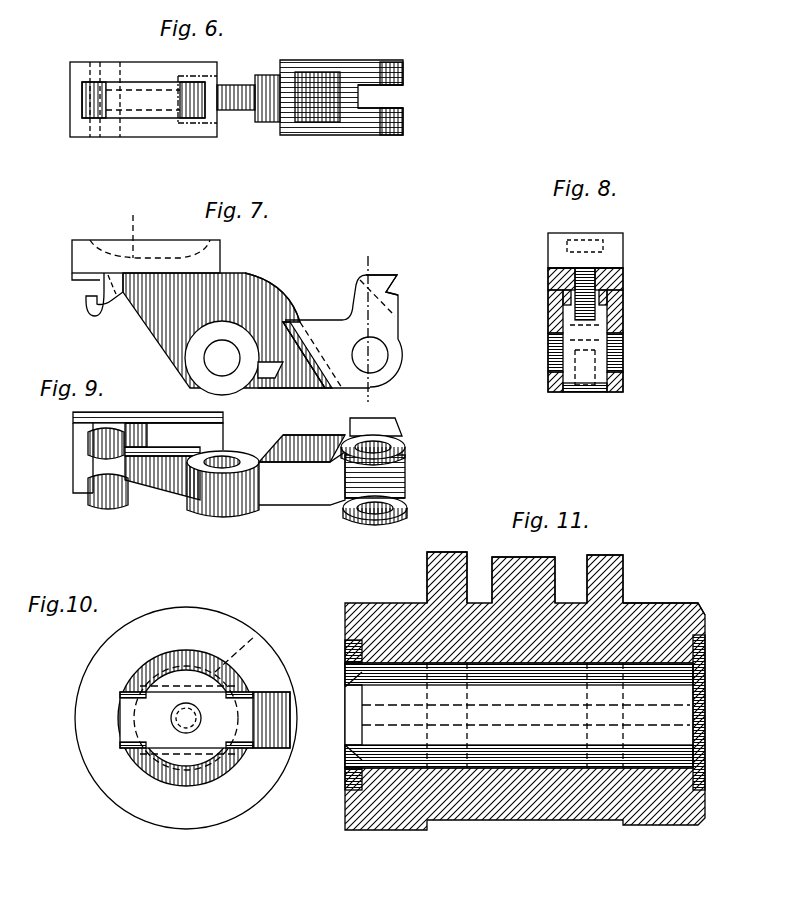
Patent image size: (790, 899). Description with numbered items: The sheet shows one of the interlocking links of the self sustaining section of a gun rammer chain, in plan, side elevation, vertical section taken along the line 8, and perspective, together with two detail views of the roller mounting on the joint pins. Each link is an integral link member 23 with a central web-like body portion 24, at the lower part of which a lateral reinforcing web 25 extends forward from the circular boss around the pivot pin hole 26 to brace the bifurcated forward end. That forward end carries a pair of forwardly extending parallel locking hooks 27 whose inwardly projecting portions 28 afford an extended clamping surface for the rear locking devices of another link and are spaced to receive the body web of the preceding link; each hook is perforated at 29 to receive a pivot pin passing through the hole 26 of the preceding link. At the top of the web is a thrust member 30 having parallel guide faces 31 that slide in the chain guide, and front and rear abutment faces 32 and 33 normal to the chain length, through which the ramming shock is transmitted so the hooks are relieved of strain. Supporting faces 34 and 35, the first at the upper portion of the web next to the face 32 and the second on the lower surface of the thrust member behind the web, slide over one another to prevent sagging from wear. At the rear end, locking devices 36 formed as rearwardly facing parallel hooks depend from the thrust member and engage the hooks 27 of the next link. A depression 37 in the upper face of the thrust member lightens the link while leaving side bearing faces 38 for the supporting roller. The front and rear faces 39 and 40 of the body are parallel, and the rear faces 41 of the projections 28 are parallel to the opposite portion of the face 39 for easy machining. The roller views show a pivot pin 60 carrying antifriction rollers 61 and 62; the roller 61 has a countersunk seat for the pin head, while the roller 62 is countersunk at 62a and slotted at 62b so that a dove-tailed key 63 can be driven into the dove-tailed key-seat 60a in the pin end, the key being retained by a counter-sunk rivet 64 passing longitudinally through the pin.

In FIG. 7, the section line 8— 8 is at (367, 325).
In FIG. 9, the section line 8— 8 is at (367, 409).
In FIG. 6, the link member 23 is at (234, 112).
In FIG. 7, the link member 23 is at (205, 380).
In FIG. 9, the link member 23 is at (223, 494).
In FIG. 8, the link member 23 is at (630, 326).
In FIG. 11, the link member 23 is at (560, 570).
In FIG. 6, the body portion 24 is at (266, 124).
In FIG. 7, the body portion 24 is at (288, 302).
In FIG. 9, the body portion 24 is at (296, 450).
In FIG. 8, the body portion 24 is at (612, 300).
In FIG. 6, the lateral reinforcing web 25 is at (262, 78).
In FIG. 7, the lateral reinforcing web 25 is at (300, 388).
In FIG. 9, the lateral reinforcing web 25 is at (280, 508).
In FIG. 7, the pivot pin hole 26 is at (214, 368).
In FIG. 9, the pivot pin hole 26 is at (212, 470).
In FIG. 6, the locking hooks 27 is at (382, 62).
In FIG. 7, the locking hooks 27 is at (396, 280).
In FIG. 9, the locking hooks 27 is at (398, 420).
In FIG. 6, the inwardly projecting portions 28 is at (400, 86).
In FIG. 9, the inwardly projecting portions 28 is at (405, 486).
In FIG. 8, the inwardly projecting portions 28 is at (556, 285).
In FIG. 7, the perforation 29 is at (386, 360).
In FIG. 9, the perforation 29 is at (406, 442).
In FIG. 8, the perforation 29 is at (556, 372).
In FIG. 6, the thrust member 30 is at (99, 89).
In FIG. 7, the thrust member 30 is at (146, 247).
In FIG. 9, the thrust member 30 is at (148, 423).
In FIG. 8, the thrust member 30 is at (585, 241).
In FIG. 6, the guide faces 31 is at (133, 64).
In FIG. 7, the guide faces 31 is at (152, 246).
In FIG. 9, the guide faces 31 is at (73, 420).
In FIG. 8, the guide faces 31 is at (548, 250).
In FIG. 6, the front abutment face 32 is at (217, 70).
In FIG. 9, the front abutment face 32 is at (223, 425).
In FIG. 8, the front abutment face 32 is at (548, 262).
In FIG. 6, the rear abutment face 33 is at (68, 118).
In FIG. 7, the rear abutment face 33 is at (72, 246).
In FIG. 9, the rear abutment face 33 is at (73, 450).
In FIG. 6, the supporting face 34 is at (232, 120).
In FIG. 7, the supporting face 34 is at (258, 276).
In FIG. 9, the supporting face 34 is at (262, 445).
In FIG. 8, the supporting face 34 is at (582, 268).
In FIG. 7, the supporting face 35 is at (72, 280).
In FIG. 9, the supporting face 35 is at (80, 478).
In FIG. 7, the locking devices 36 is at (92, 310).
In FIG. 9, the locking devices 36 is at (88, 440).
In FIG. 8, the locking devices 36 is at (625, 310).
In FIG. 6, the depression 37 is at (120, 108).
In FIG. 7, the depression 37 is at (135, 228).
In FIG. 8, the depression 37 is at (626, 236).
In FIG. 6, the bearing faces 38 is at (163, 70).
In FIG. 7, the bearing faces 38 is at (86, 240).
In FIG. 8, the bearing faces 38 is at (548, 236).
In FIG. 7, the front face 39 is at (300, 318).
In FIG. 9, the front face 39 is at (316, 432).
In FIG. 7, the rear face 40 is at (170, 335).
In FIG. 9, the rear face 40 is at (165, 492).
In FIG. 7, the rear faces of locking hook projections 41 is at (398, 300).
In FIG. 9, the rear faces of locking hook projections 41 is at (410, 492).
In FIG. 8, the rear faces of locking hook projections 41 is at (548, 305).
In FIG. 10, the pivot pin 60 is at (165, 680).
In FIG. 11, the pivot pin 60 is at (706, 676).
In FIG. 10, the dove-tailed slot 60a is at (212, 691).
In FIG. 11, the dove-tailed slot 60a is at (358, 688).
In FIG. 11, the antifriction roller 61 is at (652, 603).
In FIG. 10, the antifriction roller 62 is at (190, 828).
In FIG. 11, the antifriction roller 62 is at (402, 830).
In FIG. 10, the countersink 62a is at (148, 782).
In FIG. 11, the countersink 62a is at (345, 782).
In FIG. 10, the slot 62b is at (282, 690).
In FIG. 11, the slot 62b is at (345, 660).
In FIG. 10, the dove-tailed key 63 is at (122, 736).
In FIG. 11, the dove-tailed key 63 is at (356, 736).
In FIG. 10, the counter-sunk rivet 64 is at (198, 718).
In FIG. 11, the counter-sunk rivet 64 is at (350, 712).